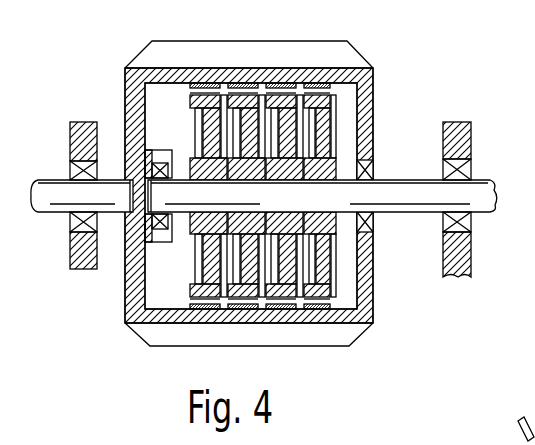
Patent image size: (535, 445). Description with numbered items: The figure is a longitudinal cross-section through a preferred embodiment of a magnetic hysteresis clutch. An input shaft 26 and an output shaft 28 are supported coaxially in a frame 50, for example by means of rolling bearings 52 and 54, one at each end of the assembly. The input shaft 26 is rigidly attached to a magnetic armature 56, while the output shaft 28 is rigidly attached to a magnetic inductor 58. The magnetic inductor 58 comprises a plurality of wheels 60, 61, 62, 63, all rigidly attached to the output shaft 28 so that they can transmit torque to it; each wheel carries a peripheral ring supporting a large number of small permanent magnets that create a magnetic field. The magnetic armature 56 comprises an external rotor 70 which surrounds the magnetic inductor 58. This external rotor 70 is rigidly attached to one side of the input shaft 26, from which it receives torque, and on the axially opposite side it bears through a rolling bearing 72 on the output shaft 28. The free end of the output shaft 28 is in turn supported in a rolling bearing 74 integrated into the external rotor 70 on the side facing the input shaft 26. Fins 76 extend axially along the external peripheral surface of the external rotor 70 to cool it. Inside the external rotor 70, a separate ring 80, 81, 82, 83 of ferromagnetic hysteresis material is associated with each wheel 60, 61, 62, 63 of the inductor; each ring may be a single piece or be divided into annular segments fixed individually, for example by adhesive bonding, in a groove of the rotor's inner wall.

The input shaft 26 is at (53, 197).
The output shaft 28 is at (484, 203).
The frame 50 is at (82, 128).
The rolling bearing 52 is at (72, 172).
The rolling bearing 54 is at (471, 172).
The magnetic armature 56 is at (133, 336).
The magnetic inductor 58 is at (336, 269).
The wheel 60 is at (207, 128).
The wheel 61 is at (242, 130).
The wheel 62 is at (278, 130).
The wheel 63 is at (314, 128).
The external rotor 70 is at (130, 292).
The rolling bearing 72 is at (372, 172).
The rolling bearing 74 is at (150, 172).
The fins 76 is at (346, 52).
The ring 80 is at (205, 300).
The ring 81 is at (245, 300).
The ring 82 is at (283, 300).
The ring 83 is at (321, 300).